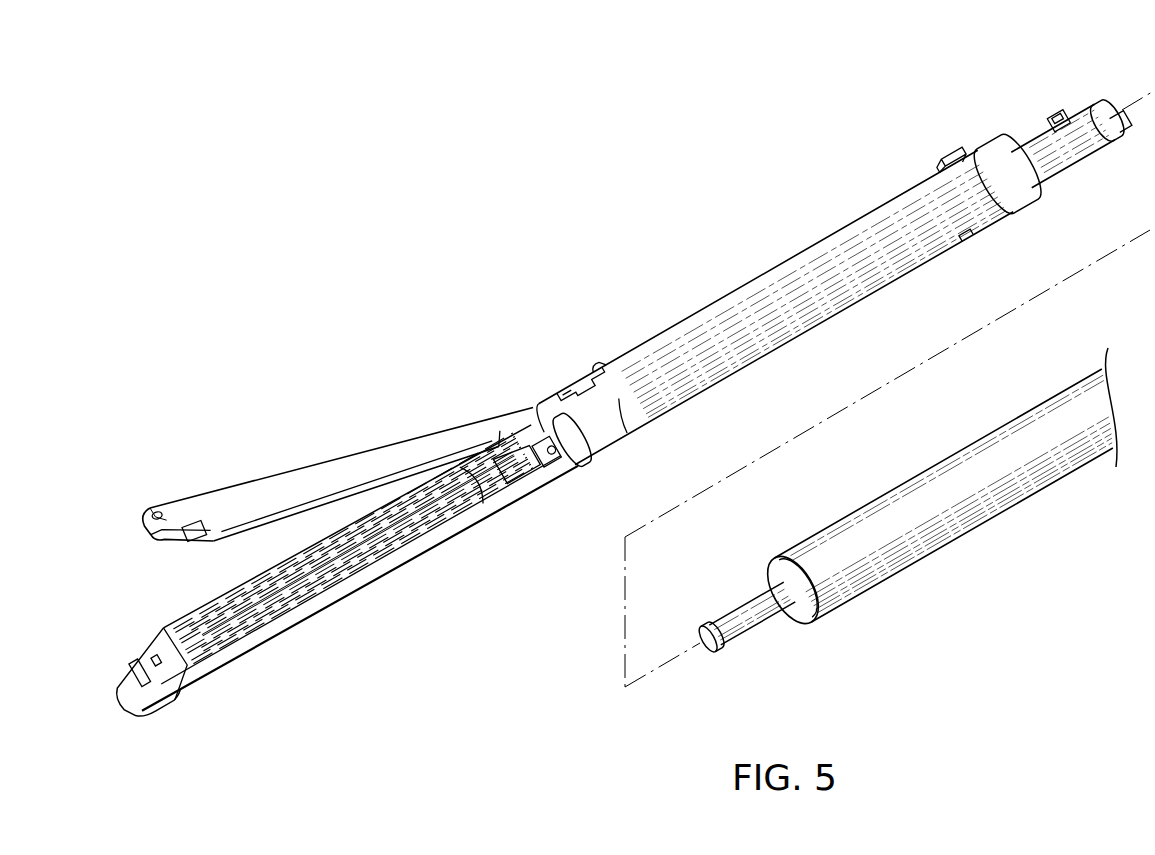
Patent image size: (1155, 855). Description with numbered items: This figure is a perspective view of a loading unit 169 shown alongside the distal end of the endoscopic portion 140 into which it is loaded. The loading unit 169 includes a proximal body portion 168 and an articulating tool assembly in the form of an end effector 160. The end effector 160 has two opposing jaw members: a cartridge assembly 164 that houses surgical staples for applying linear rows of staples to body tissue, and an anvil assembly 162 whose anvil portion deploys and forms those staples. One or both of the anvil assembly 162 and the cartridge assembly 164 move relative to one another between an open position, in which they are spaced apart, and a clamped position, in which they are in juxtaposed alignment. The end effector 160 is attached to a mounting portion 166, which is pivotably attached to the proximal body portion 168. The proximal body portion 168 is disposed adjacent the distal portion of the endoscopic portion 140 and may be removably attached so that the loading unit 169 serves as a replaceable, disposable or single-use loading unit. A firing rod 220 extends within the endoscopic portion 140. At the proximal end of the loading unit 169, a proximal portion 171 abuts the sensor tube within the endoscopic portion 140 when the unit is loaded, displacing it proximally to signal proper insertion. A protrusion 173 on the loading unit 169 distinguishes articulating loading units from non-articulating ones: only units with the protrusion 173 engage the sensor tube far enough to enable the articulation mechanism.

The endoscopic portion 140 is at (965, 419).
The end effector 160 is at (449, 418).
The anvil assembly 162 is at (228, 492).
The cartridge assembly 164 is at (402, 556).
The mounting portion 166 is at (602, 444).
The proximal body portion 168 is at (918, 252).
The loading unit 169 is at (762, 251).
The proximal portion 171 is at (1066, 107).
The protrusion 173 is at (1047, 115).
The firing rod 220 is at (727, 620).